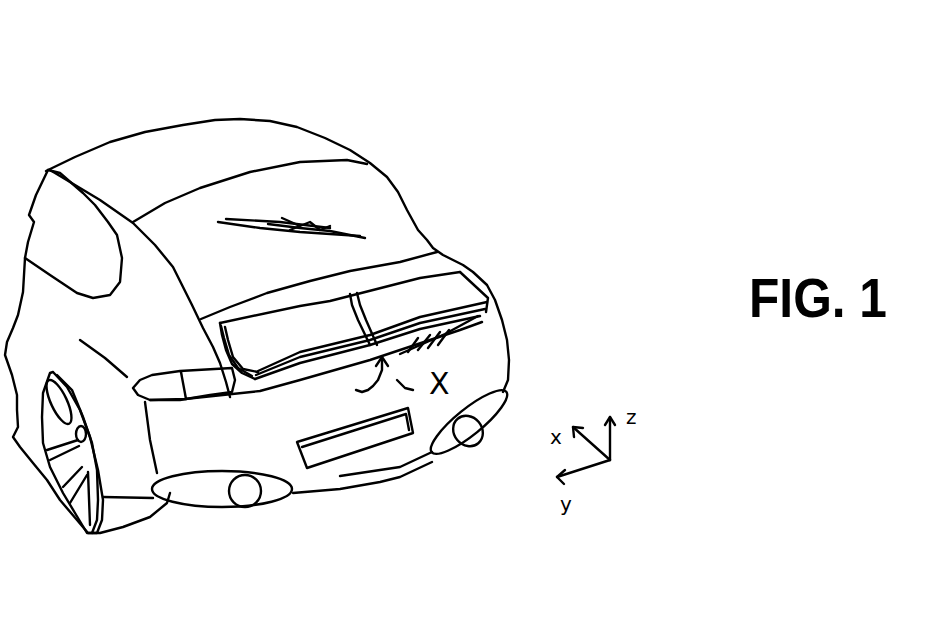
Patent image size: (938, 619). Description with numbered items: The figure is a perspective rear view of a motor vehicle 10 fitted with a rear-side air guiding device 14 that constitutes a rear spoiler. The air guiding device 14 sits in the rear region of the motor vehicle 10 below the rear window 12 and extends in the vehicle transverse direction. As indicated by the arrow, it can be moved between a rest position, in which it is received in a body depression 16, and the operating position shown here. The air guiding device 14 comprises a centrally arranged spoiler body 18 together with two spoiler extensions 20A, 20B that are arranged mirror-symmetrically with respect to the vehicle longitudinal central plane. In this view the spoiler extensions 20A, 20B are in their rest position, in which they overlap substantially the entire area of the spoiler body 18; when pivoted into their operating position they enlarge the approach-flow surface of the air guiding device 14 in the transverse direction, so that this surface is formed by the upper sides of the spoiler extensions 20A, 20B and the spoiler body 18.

The motor vehicle 10 is at (293, 272).
The rear window 12 is at (306, 228).
The air guiding device 14 is at (354, 308).
The body depression 16 is at (308, 458).
The spoiler body 18 is at (350, 420).
The spoiler extension 20A is at (196, 344).
The spoiler extension 20B is at (489, 278).